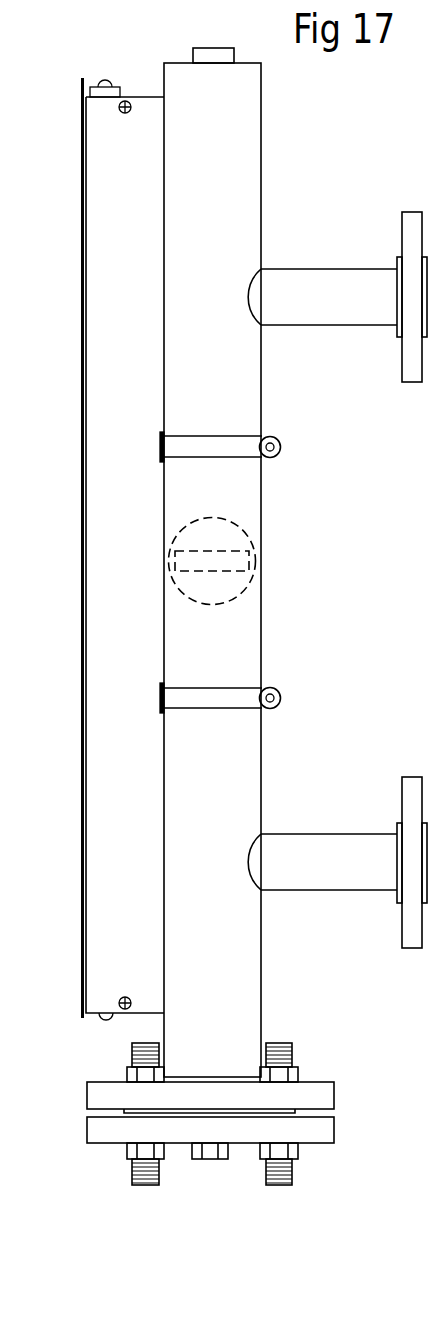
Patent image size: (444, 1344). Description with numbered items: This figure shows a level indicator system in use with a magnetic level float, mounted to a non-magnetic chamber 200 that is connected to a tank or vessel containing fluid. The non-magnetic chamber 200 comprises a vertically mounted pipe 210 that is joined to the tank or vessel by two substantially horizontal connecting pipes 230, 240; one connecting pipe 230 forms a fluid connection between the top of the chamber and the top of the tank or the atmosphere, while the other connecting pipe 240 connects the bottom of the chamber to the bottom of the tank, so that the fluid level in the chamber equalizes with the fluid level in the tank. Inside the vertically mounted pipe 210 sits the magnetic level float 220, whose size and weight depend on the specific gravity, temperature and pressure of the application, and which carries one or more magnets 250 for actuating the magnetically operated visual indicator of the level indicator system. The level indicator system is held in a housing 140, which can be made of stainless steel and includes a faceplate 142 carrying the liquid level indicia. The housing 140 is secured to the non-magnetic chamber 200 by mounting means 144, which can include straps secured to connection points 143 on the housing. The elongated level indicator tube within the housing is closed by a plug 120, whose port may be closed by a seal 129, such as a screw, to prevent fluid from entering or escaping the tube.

The non-magnetic chamber 200 is at (282, 118).
The vertically mounted pipe 210 is at (240, 207).
The magnetic level float 220 is at (230, 545).
The connecting pipe 230 is at (307, 283).
The connecting pipe 240 is at (302, 878).
The magnet 250 is at (230, 562).
The housing 140 is at (147, 107).
The faceplate 142 is at (80, 143).
The connection point 143 is at (160, 447).
The mounting means 144 is at (233, 443).
The seal 129 is at (99, 78).
The plug 120 is at (432, 154).